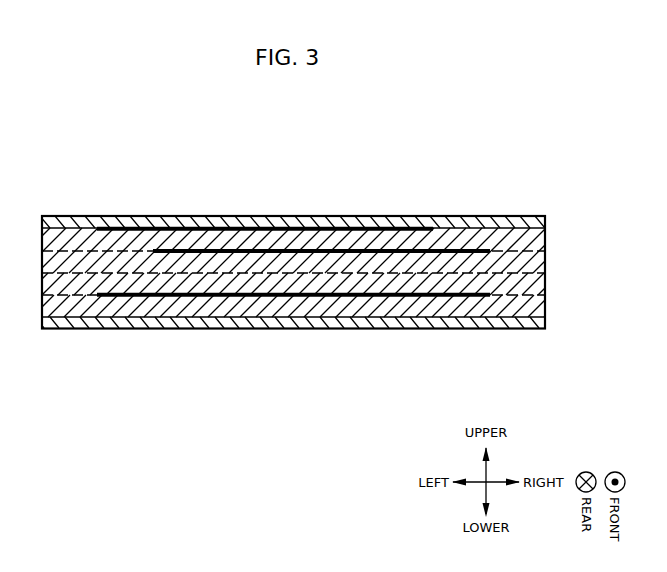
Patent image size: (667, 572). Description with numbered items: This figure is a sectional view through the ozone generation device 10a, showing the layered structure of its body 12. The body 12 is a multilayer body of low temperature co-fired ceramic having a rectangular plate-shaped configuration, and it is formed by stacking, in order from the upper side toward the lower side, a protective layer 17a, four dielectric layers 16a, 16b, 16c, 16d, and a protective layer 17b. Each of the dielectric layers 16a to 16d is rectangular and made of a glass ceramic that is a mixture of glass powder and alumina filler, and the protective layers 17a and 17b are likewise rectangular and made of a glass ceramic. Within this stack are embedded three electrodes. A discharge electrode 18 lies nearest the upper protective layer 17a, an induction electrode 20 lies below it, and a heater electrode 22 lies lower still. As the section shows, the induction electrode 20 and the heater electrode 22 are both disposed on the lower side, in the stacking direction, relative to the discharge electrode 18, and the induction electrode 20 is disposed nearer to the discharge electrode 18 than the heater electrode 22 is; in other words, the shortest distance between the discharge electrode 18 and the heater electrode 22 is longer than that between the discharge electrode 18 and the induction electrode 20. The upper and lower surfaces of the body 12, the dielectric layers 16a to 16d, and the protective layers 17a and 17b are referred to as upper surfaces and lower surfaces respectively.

The ozone generation device 10a is at (82, 130).
The body 12 is at (99, 205).
The dielectric layer 16a is at (545, 236).
The dielectric layer 16b is at (545, 261).
The dielectric layer 16c is at (545, 286).
The dielectric layer 16d is at (545, 310).
The protective layer 17a is at (526, 218).
The protective layer 17b is at (523, 324).
The discharge electrode 18 is at (330, 224).
The induction electrode 20 is at (441, 247).
The heater electrode 22 is at (372, 298).